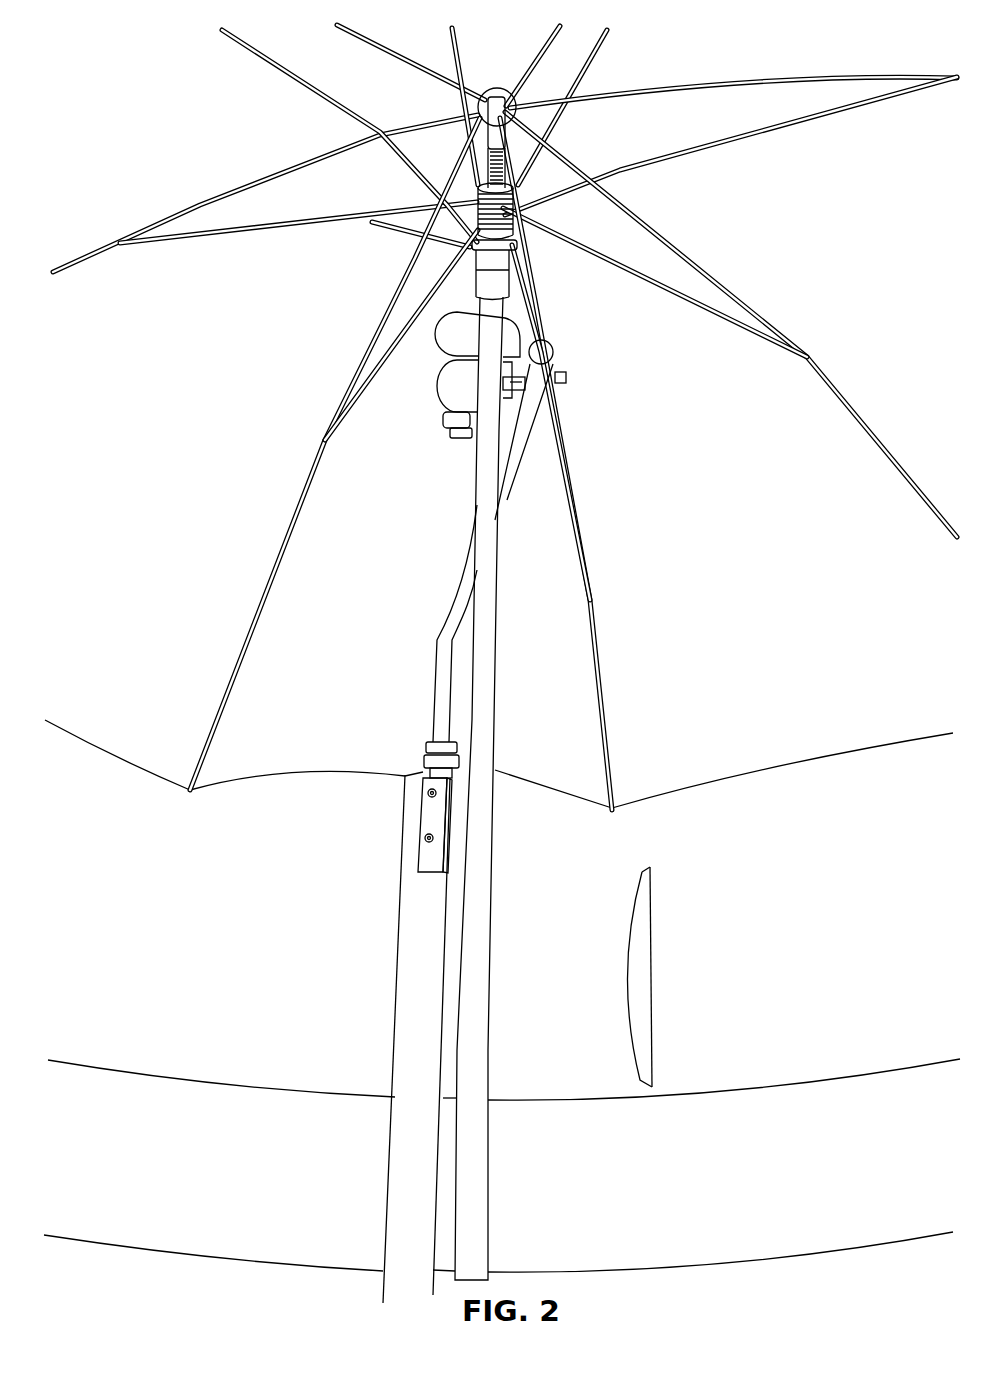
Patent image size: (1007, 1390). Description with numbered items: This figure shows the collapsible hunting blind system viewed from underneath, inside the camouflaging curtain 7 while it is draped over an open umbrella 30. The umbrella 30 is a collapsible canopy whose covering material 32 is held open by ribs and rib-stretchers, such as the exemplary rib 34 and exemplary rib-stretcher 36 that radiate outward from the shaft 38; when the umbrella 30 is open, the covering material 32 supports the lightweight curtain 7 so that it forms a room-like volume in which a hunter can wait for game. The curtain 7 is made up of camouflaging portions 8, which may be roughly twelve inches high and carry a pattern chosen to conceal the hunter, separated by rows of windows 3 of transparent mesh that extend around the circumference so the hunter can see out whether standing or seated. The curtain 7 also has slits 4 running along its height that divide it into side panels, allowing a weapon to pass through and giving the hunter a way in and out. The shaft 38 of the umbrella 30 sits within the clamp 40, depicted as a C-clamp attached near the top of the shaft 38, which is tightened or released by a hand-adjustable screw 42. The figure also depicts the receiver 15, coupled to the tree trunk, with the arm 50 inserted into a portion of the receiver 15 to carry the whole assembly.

The windows 3 is at (545, 1193).
The slits 4 is at (640, 1013).
The camouflaging curtain 7 is at (812, 930).
The camouflaging portions 8 is at (251, 997).
The receiver 15 is at (419, 824).
The umbrella 30 is at (676, 782).
The covering material 32 is at (697, 648).
The rib 34 is at (304, 481).
The rib-stretcher 36 is at (302, 236).
The shaft 38 is at (488, 880).
The clamp 40 is at (433, 390).
The hand-adjustable screw 42 is at (452, 440).
The arm 50 is at (440, 653).